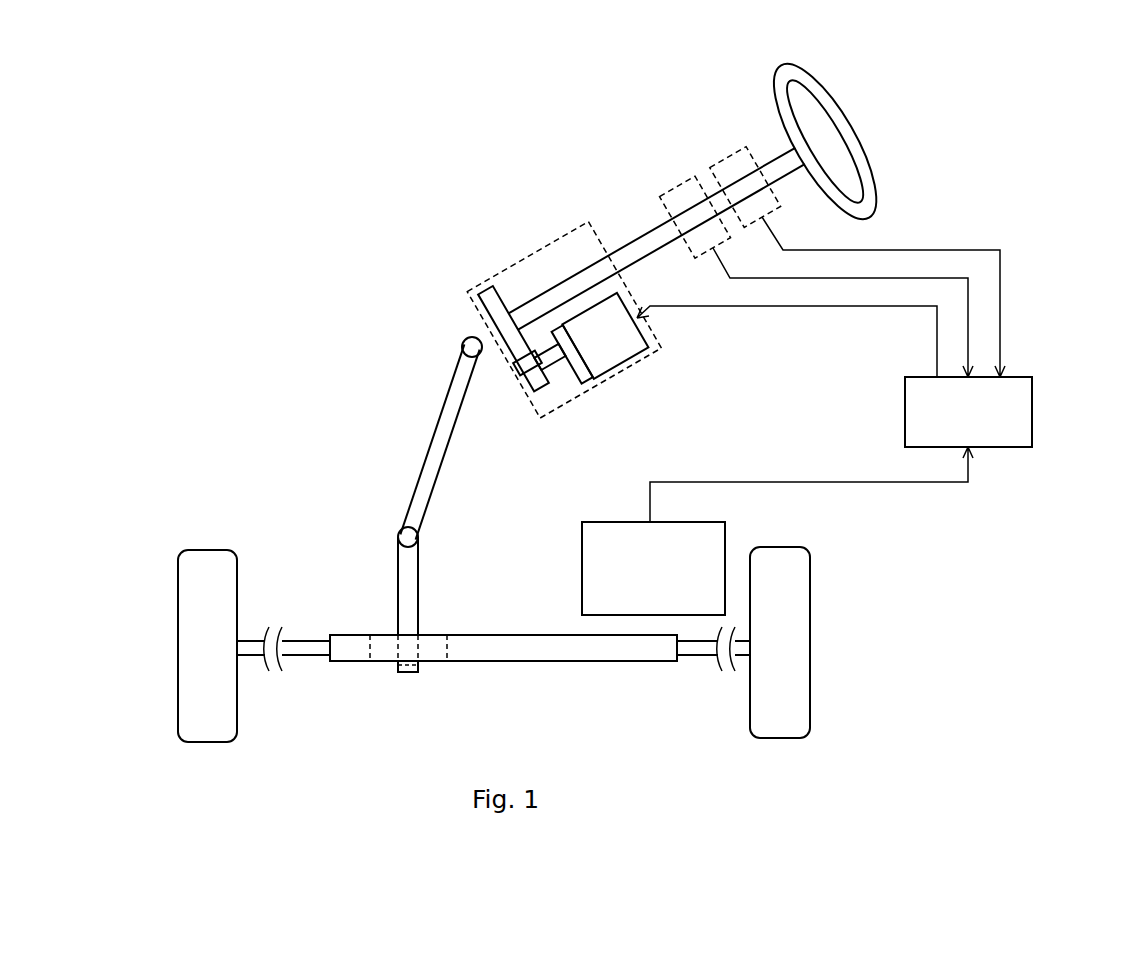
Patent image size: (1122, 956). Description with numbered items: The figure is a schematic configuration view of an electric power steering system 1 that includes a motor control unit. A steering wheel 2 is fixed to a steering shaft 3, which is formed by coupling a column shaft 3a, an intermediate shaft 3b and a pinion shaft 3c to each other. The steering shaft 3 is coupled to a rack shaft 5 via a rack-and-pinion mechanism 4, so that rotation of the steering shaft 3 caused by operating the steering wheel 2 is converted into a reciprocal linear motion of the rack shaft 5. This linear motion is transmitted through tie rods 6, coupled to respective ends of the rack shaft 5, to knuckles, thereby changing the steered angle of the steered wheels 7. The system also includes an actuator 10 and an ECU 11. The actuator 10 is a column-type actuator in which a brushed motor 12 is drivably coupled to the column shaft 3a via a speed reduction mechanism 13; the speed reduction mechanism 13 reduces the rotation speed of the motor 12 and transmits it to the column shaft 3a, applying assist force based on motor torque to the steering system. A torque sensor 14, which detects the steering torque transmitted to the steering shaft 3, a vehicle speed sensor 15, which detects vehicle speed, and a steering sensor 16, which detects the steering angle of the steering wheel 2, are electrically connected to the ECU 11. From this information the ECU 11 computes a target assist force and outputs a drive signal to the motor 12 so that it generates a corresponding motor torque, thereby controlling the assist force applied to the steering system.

The electric power steering system 1 is at (1056, 85).
The steering wheel 2 is at (860, 140).
The steering shaft 3 is at (408, 426).
The column shaft 3a is at (478, 333).
The intermediate shaft 3b is at (439, 434).
The pinion shaft 3c is at (382, 541).
The rack-and-pinion mechanism 4 is at (432, 644).
The rack shaft 5 is at (513, 636).
The tie rod 6 is at (307, 642).
The steered wheel 7 is at (207, 549).
The actuator 10 is at (564, 311).
The ECU 11 is at (1033, 408).
The motor 12 is at (599, 339).
The speed reduction mechanism 13 is at (525, 360).
The torque sensor 14 is at (678, 182).
The vehicle speed sensor 15 is at (602, 521).
The steering sensor 16 is at (728, 153).